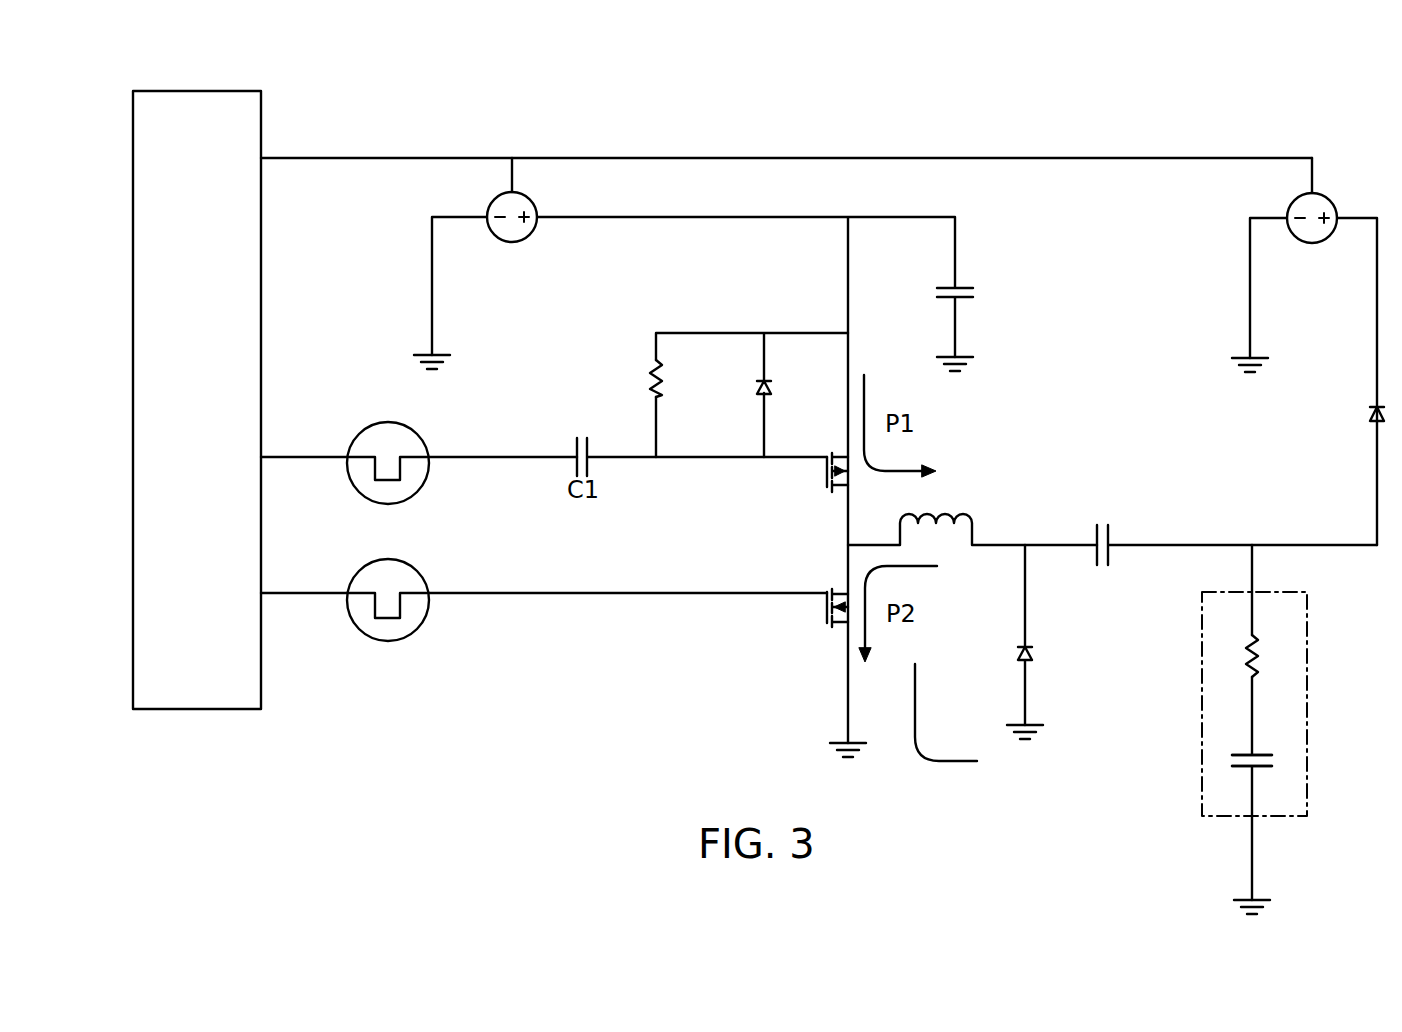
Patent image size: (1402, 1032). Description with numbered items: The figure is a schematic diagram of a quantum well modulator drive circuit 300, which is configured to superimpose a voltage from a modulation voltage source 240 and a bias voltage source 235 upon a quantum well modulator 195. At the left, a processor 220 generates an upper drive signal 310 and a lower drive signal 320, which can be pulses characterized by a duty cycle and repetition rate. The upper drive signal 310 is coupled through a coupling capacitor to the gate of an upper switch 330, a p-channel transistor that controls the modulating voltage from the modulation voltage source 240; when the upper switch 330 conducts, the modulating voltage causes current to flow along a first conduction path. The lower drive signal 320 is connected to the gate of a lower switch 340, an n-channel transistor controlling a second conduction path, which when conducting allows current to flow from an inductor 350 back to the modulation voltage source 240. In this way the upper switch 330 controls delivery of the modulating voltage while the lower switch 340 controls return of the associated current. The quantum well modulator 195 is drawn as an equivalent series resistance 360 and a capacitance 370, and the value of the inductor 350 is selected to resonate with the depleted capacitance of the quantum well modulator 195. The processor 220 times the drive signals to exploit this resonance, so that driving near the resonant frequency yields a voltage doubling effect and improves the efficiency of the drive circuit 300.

The drive circuit 300 is at (1236, 86).
The processor 220 is at (262, 133).
The modulation voltage source 240 is at (490, 203).
The bias voltage source 235 is at (1290, 207).
The upper drive signal 310 is at (421, 437).
The lower drive signal 320 is at (421, 566).
The upper switch 330 is at (825, 481).
The lower switch 340 is at (825, 616).
The inductor 350 is at (976, 521).
The equivalent series resistance 360 is at (1262, 648).
The capacitance 370 is at (1262, 754).
The quantum well modulator 195 is at (1247, 729).